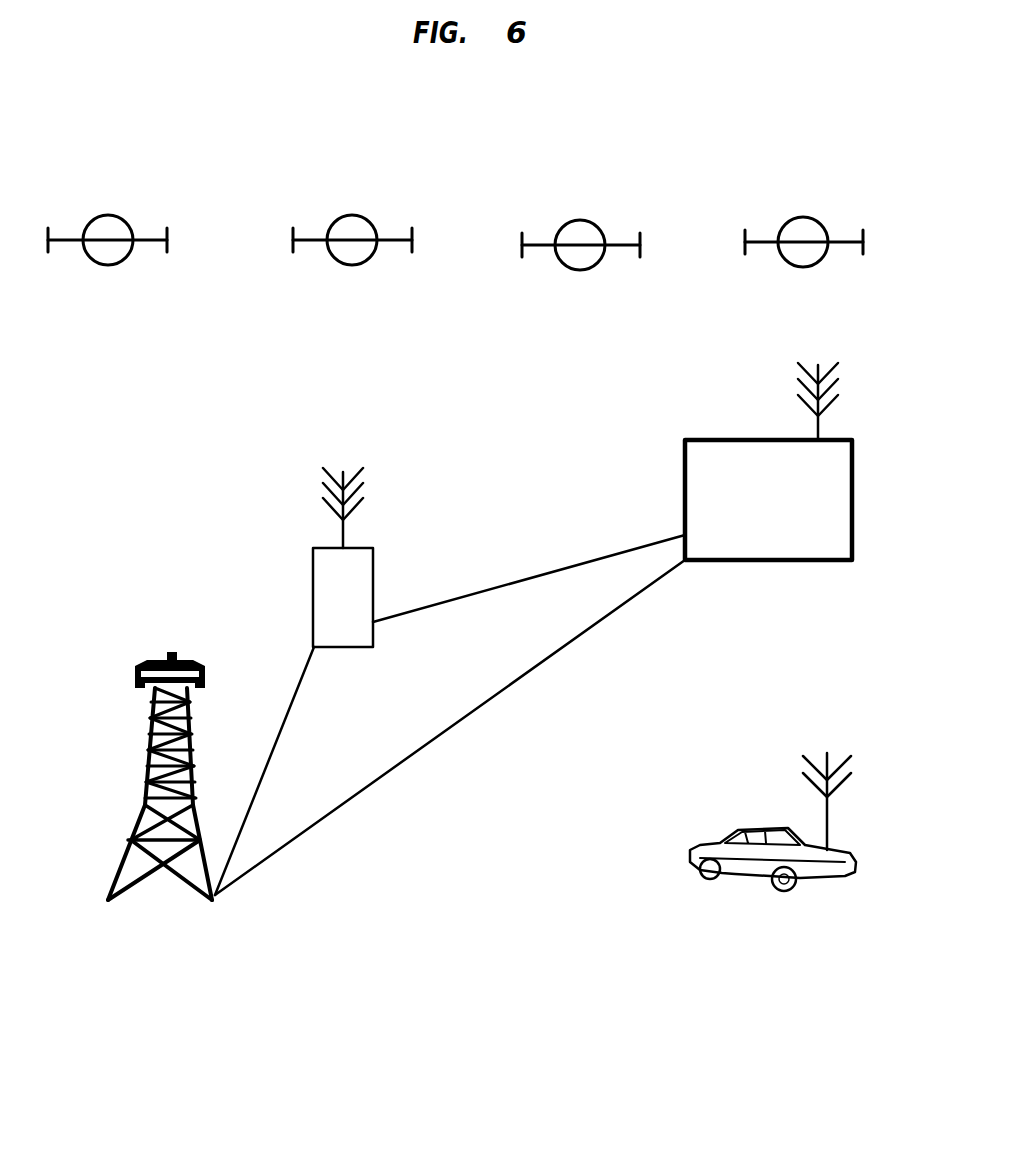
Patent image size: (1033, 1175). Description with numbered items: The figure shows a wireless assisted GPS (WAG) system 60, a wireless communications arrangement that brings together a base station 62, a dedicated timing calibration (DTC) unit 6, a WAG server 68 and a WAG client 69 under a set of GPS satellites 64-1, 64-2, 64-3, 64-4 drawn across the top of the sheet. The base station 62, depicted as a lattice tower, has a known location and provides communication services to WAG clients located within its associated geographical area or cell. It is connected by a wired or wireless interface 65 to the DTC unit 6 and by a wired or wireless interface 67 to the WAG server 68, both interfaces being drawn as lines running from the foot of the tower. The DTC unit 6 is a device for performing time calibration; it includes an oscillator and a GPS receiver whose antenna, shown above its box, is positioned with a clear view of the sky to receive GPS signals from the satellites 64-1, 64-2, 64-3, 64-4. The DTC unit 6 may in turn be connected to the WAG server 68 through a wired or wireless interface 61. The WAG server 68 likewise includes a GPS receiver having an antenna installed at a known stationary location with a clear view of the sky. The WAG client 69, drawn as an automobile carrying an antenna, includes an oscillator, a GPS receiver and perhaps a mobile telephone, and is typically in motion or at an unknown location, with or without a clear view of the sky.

The wireless assisted GPS (WAG) system 60 is at (192, 1020).
The wired or wireless interface 61 is at (555, 568).
The base station 62 is at (152, 737).
The GPS satellite 64-1 is at (109, 215).
The GPS satellite 64-2 is at (353, 215).
The GPS satellite 64-3 is at (583, 220).
The GPS satellite 64-4 is at (811, 218).
The dedicated timing calibration (DTC) unit 6 is at (373, 568).
The wired or wireless interface 65 is at (288, 707).
The wired or wireless interface 67 is at (470, 711).
The WAG server 68 is at (852, 472).
The WAG client 69 is at (733, 826).